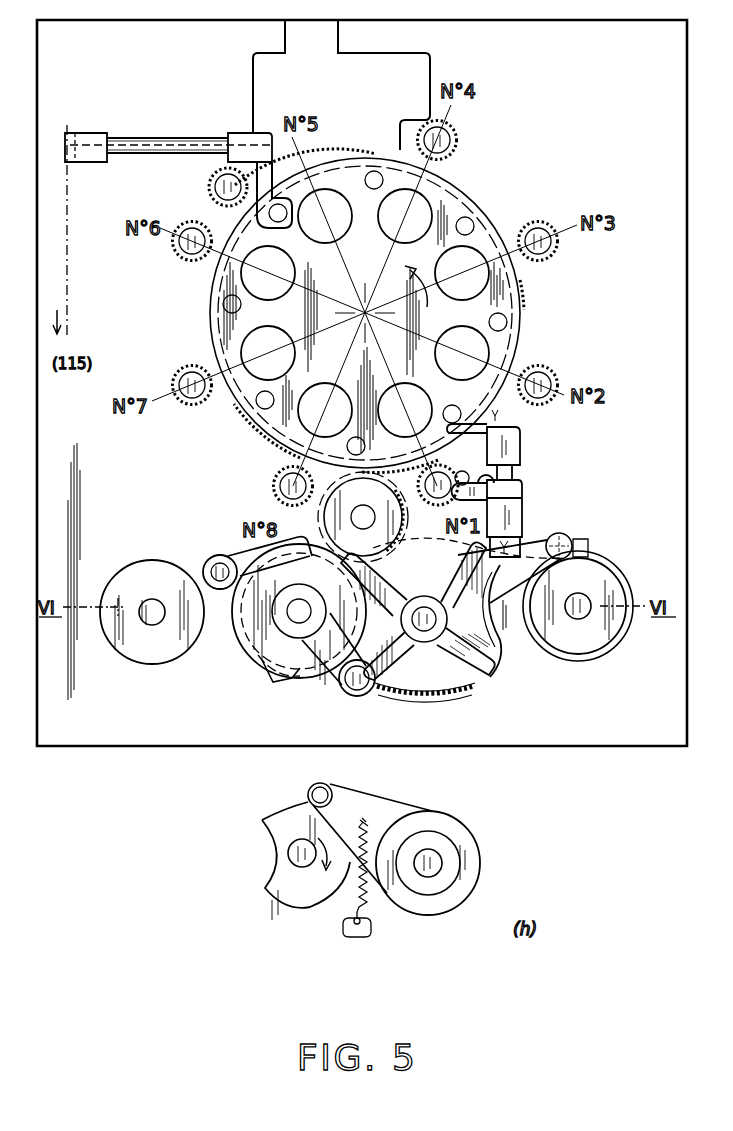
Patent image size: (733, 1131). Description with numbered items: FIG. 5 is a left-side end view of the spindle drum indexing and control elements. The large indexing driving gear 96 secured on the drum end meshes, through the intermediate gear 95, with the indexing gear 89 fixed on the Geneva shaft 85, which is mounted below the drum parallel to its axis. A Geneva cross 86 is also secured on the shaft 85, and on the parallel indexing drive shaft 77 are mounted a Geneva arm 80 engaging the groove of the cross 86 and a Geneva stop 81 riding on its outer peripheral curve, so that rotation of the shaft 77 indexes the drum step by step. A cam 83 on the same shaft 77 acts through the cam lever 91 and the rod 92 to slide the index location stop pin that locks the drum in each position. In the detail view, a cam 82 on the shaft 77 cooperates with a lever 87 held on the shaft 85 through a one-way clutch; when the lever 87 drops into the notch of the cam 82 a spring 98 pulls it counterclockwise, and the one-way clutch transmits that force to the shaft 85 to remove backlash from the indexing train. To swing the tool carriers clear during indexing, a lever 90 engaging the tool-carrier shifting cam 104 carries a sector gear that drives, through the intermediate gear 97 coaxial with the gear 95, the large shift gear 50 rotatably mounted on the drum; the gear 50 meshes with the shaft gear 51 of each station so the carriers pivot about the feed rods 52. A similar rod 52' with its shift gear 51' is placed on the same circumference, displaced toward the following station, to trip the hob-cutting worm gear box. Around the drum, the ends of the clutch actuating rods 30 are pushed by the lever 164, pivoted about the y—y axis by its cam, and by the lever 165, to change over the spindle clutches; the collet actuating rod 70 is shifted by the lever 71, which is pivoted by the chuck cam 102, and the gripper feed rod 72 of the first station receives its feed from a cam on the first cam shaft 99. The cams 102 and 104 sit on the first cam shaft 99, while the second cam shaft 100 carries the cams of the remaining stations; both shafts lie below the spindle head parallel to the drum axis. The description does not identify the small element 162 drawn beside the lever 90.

The clutch actuating rod 30 is at (374, 172).
The large shift gear 50 is at (528, 327).
The large indexing driving gear 96 is at (527, 298).
The shaft gear 51 is at (372, 299).
The feed rod 52 is at (382, 313).
The shift gear 51' is at (206, 179).
The rod 52' is at (195, 194).
The lever 165 is at (243, 138).
The lever 164 is at (522, 438).
The gripper feed rod 72 is at (510, 473).
The lever 71 is at (524, 497).
The collet actuating rod 70 is at (463, 472).
The intermediate gear 95 is at (438, 508).
The intermediate gear 97 is at (320, 522).
The rod 92 is at (212, 558).
The cam lever 91 is at (230, 555).
The indexing drive shaft 77 is at (292, 614).
The cam 83 is at (314, 672).
The Geneva stop 81 is at (270, 680).
The Geneva arm 80 is at (345, 688).
The Geneva shaft 85 is at (426, 633).
The Geneva cross 86 is at (462, 698).
The indexing gear 89 is at (413, 694).
The lever 90 is at (467, 607).
The roller 162 is at (573, 545).
The first cam shaft 99 is at (588, 601).
The cam for shifting the tool carrier 104 is at (598, 657).
The cam for opening and closing the chuck 102 is at (618, 637).
The second cam shaft 100 is at (152, 625).
The cam 82 is at (300, 893).
The spring 98 is at (348, 902).
The lever 87 is at (445, 902).